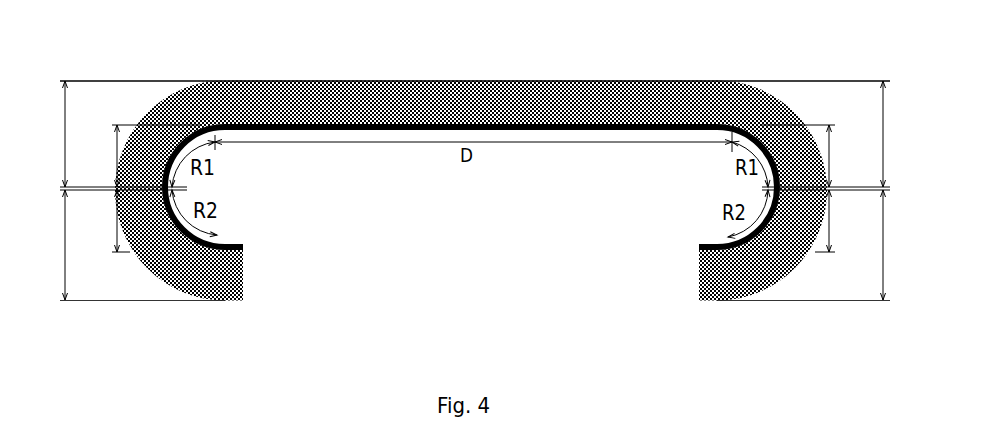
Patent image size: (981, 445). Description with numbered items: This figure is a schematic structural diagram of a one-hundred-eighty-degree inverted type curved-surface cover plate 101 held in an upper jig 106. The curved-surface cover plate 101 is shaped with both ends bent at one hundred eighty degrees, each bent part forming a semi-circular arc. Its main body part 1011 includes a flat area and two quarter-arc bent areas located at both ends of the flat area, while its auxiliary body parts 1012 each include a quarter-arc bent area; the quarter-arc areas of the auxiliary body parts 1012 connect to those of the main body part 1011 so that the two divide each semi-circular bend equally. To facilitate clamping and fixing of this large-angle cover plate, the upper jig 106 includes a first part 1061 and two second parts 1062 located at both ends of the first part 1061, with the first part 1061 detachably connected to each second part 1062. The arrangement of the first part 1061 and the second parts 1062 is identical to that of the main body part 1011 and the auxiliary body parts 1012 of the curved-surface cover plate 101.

The upper jig 106 is at (330, 82).
The curved-surface cover plate 101 is at (580, 125).
The first part 1061 is at (474, 134).
The second parts 1062 is at (475, 245).
The main body part 1011 is at (472, 156).
The auxiliary body parts 1012 is at (472, 221).